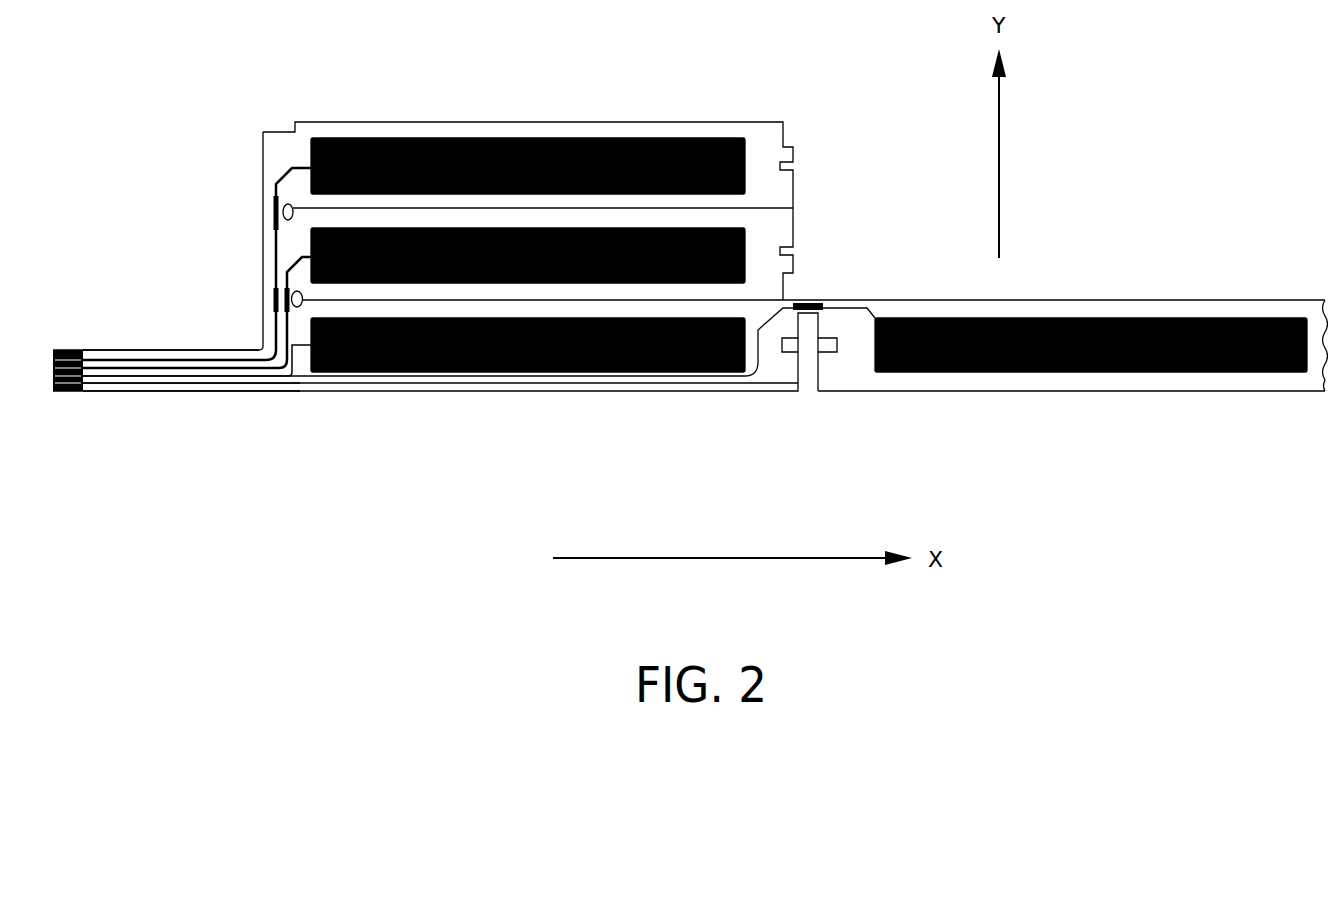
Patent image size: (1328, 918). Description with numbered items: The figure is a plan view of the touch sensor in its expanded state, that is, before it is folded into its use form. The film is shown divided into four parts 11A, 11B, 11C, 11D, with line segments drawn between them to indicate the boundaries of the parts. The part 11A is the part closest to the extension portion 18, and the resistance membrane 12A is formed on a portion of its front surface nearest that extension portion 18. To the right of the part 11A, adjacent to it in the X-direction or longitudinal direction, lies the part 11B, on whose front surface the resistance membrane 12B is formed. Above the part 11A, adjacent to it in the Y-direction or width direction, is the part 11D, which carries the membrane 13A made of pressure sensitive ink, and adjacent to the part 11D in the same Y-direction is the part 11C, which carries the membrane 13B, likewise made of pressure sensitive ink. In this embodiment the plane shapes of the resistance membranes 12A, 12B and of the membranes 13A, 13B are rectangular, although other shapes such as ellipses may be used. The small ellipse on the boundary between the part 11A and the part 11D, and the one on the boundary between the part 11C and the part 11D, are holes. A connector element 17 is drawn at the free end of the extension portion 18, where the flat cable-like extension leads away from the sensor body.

The part 11A is at (773, 380).
The part 11B is at (1272, 378).
The part 11C is at (772, 133).
The part 11D is at (777, 235).
The resistance membrane 12A is at (572, 362).
The resistance membrane 12B is at (1072, 368).
The membrane 13A is at (568, 150).
The membrane 13B is at (737, 272).
The connector 17 is at (68, 345).
The extension portion 18 is at (175, 345).